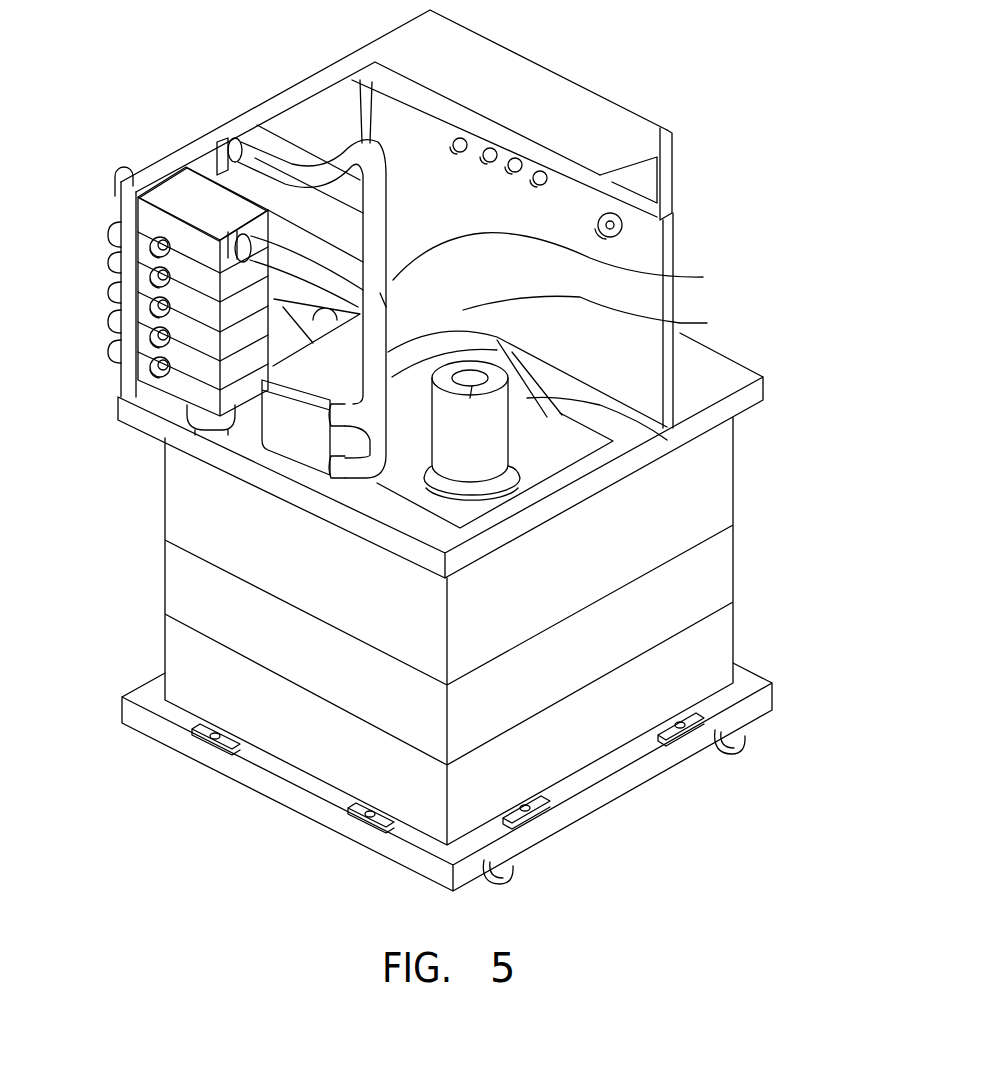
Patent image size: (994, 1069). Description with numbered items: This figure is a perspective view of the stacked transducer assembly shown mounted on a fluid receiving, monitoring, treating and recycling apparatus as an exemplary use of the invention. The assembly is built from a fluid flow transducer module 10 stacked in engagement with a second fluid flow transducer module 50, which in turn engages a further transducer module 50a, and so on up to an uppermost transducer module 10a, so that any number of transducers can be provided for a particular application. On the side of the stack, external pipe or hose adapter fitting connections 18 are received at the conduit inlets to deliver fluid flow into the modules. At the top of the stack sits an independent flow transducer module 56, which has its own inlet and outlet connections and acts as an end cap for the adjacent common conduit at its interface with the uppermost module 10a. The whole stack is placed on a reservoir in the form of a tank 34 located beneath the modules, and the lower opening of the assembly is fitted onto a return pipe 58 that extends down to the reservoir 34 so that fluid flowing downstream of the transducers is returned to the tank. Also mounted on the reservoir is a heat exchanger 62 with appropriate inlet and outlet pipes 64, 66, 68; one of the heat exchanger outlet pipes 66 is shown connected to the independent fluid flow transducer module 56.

The fluid flow transducer module 10 is at (142, 256).
The uppermost transducer module 10a is at (142, 247).
The hose adapter fitting connection 18 is at (112, 227).
The tank 34 is at (172, 518).
The second fluid flow transducer module 50 is at (140, 277).
The further transducer module 50a is at (142, 310).
The independent flow transducer module 56 is at (177, 190).
The return pipe 58 is at (200, 420).
The heat exchanger 62 is at (603, 319).
The heat exchanger pipe 64 is at (670, 448).
The heat exchanger outlet pipe 66 is at (567, 264).
The heat exchanger pipe 68 is at (375, 140).